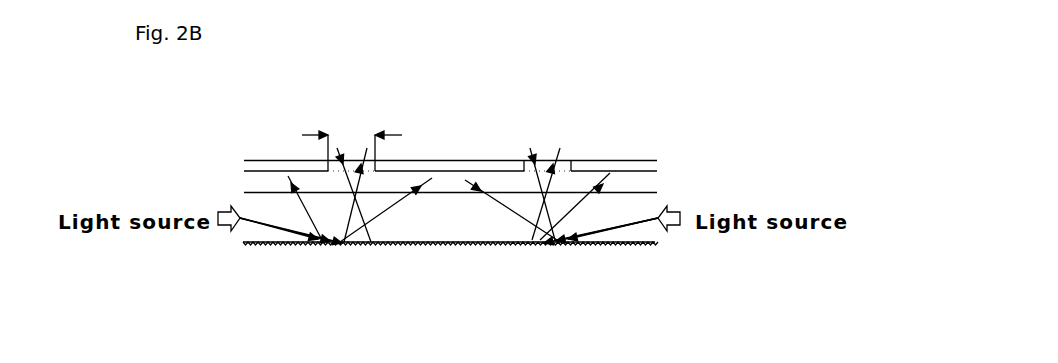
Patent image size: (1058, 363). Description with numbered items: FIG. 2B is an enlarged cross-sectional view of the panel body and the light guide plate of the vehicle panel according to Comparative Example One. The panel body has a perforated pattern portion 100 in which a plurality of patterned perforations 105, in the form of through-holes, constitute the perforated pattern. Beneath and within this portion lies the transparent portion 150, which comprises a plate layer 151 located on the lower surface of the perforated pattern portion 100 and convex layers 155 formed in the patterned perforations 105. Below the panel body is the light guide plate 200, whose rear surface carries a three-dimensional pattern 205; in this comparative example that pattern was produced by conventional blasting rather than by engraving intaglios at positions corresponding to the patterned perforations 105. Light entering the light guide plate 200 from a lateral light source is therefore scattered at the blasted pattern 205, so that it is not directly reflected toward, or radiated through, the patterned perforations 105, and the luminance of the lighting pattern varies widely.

The perforated pattern portion 100 is at (455, 136).
The patterned perforations 105 is at (352, 135).
The transparent portion 150 is at (497, 142).
The plate layer 151 is at (252, 182).
The convex layers 155 is at (322, 152).
The light guide plate 200 is at (455, 287).
The patterned intaglios 205 is at (620, 238).